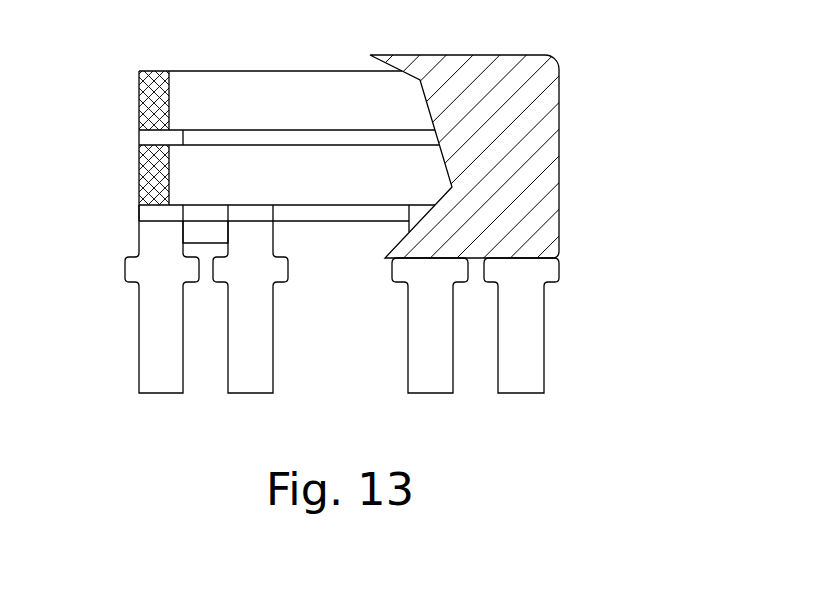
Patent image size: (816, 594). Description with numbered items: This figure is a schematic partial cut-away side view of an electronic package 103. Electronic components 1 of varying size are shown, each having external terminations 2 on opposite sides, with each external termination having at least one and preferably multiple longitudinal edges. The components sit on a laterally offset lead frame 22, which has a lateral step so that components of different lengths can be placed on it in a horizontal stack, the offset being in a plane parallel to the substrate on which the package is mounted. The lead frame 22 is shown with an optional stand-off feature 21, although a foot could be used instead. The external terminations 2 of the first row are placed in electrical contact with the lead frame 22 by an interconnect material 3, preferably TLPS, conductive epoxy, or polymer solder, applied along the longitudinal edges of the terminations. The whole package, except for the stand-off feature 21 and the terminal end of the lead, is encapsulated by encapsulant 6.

The electronic component 1 is at (304, 179).
The external termination 2 is at (150, 170).
The interconnect material 3 is at (148, 138).
The encapsulant 6 is at (522, 85).
The stand-off feature 21 is at (126, 282).
The laterally offset lead frame 22 is at (518, 342).
The electronic package 103 is at (589, 168).